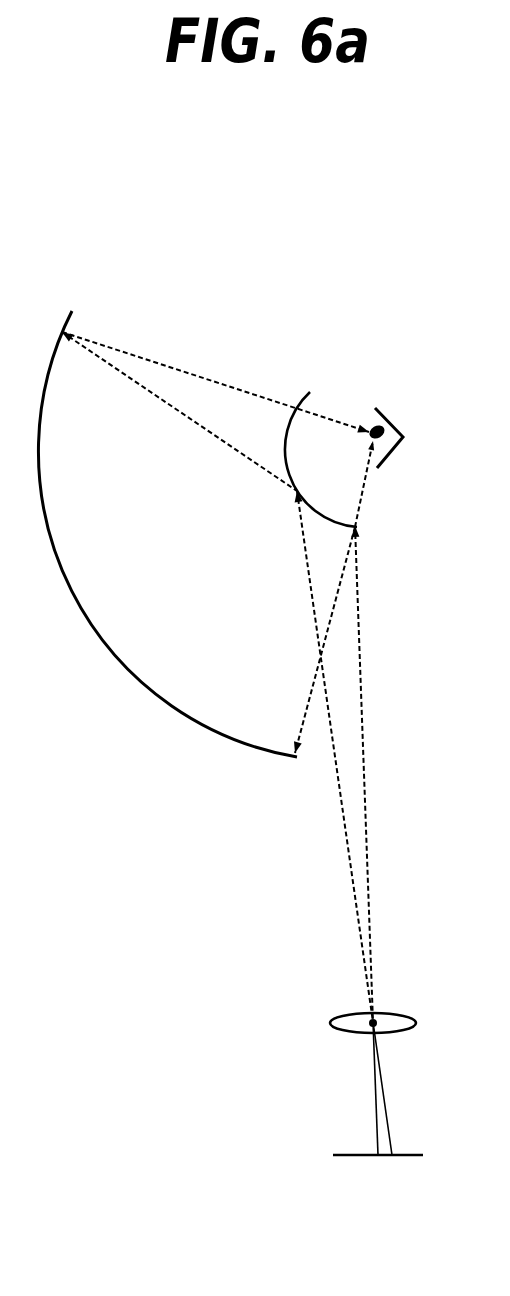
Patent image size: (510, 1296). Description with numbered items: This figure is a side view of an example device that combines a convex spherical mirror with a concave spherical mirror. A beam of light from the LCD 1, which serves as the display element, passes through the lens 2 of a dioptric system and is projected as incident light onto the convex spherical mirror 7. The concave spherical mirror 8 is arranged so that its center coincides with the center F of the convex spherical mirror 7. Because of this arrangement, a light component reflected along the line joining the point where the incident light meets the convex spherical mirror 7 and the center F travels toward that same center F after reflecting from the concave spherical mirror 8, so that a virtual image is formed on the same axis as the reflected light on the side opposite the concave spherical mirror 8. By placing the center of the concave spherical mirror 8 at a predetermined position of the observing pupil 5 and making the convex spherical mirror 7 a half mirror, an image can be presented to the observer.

The LCD 1 is at (355, 1153).
The lens 2 is at (398, 1012).
The observing pupil 5 is at (377, 430).
The convex spherical mirror 7 is at (302, 400).
The concave spherical mirror 8 is at (42, 503).
The center of the convex spherical mirror F is at (370, 442).